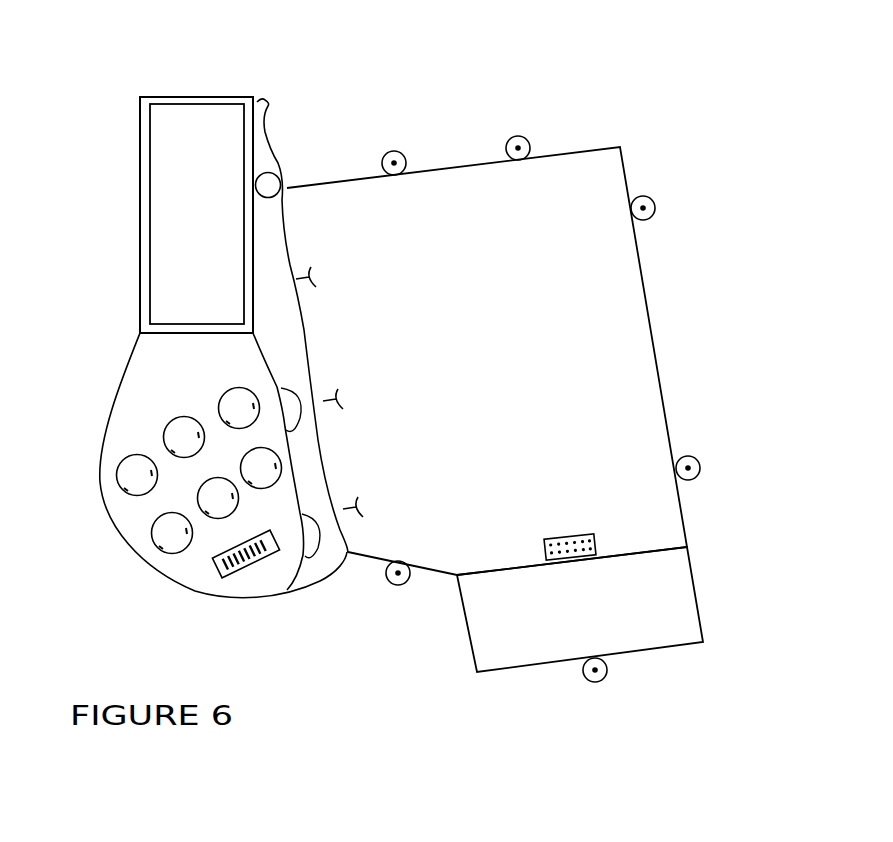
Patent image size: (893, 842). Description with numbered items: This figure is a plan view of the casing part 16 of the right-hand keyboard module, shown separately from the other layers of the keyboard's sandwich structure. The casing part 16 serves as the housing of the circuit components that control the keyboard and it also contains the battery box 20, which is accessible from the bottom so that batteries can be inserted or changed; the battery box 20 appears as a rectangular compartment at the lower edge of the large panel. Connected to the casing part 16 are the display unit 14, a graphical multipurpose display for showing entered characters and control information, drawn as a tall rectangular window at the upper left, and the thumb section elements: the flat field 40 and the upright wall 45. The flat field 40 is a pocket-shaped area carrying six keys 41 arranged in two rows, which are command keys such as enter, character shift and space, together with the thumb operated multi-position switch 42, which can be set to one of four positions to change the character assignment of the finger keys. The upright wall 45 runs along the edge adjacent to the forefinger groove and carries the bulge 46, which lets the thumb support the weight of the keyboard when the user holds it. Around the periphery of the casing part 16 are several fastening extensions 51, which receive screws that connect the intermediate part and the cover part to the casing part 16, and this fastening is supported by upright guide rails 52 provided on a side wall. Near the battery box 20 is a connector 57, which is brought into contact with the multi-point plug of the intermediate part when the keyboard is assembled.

The graphical multipurpose display unit 14 is at (190, 120).
The casing part 16 is at (653, 343).
The battery box 20 is at (673, 597).
The flat field 40 is at (148, 402).
The keys 41 is at (160, 545).
The thumb operated multi-position switch 42 is at (242, 565).
The upright wall 45 is at (285, 385).
The bulge 46 is at (300, 473).
The fastening extensions 51 is at (510, 138).
The upright guide rails 52 is at (312, 277).
The connector 57 is at (562, 536).